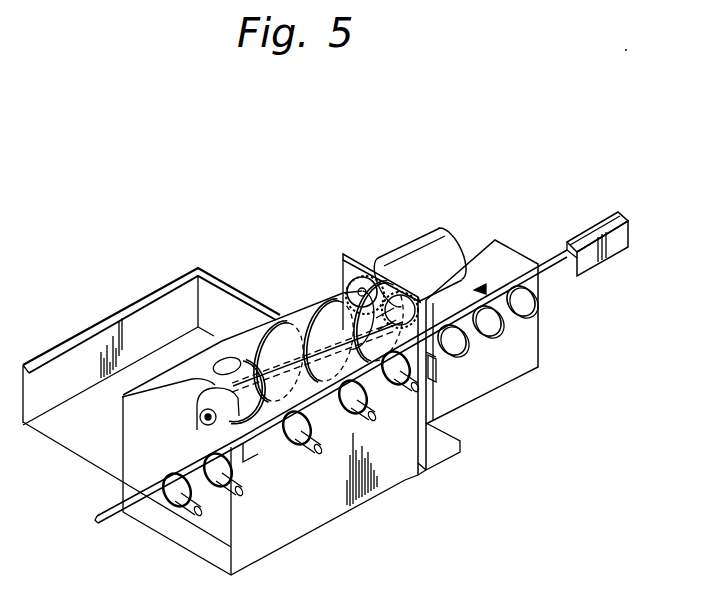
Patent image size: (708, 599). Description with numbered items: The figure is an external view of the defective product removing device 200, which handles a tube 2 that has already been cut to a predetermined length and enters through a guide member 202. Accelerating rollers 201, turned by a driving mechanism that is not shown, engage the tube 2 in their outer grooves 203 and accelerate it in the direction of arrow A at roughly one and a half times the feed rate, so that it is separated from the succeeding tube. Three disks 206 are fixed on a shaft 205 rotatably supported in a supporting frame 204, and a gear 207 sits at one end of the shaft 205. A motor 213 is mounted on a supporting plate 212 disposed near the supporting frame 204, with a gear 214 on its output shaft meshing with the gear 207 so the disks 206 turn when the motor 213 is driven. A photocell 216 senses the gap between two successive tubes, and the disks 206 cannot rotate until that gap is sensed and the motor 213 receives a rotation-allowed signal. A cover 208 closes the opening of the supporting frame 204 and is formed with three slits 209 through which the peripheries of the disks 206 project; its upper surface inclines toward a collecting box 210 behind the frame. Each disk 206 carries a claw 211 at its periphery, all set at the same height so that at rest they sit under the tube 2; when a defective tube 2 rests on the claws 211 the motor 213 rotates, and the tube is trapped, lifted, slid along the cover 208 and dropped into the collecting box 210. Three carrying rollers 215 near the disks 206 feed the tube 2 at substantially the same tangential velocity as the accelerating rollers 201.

The tube 2 is at (547, 262).
The defective product removing device 200 is at (426, 478).
The accelerating rollers 201 is at (468, 340).
The guide member 202 is at (618, 262).
The outer grooves 203 is at (490, 337).
The supporting frame 204 is at (123, 463).
The shaft 205 is at (316, 308).
The disks 206 is at (285, 322).
The gear 207 is at (410, 262).
The cover 208 is at (133, 422).
The slits 209 is at (220, 356).
The collecting box 210 is at (212, 286).
The claw 211 is at (265, 442).
The supporting plate 212 is at (437, 425).
The motor 213 is at (463, 240).
The gear 214 is at (356, 253).
The carrying rollers 215 is at (301, 443).
The photocell 216 is at (436, 363).